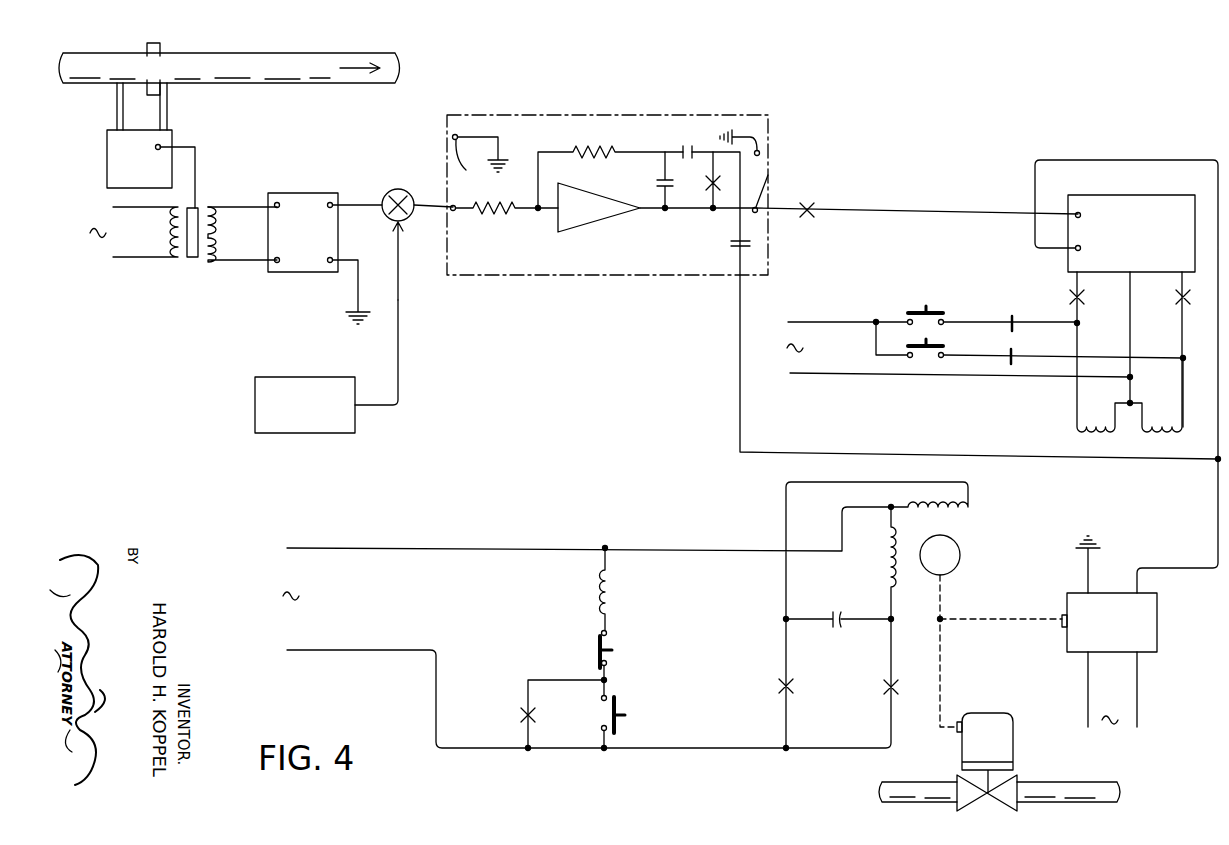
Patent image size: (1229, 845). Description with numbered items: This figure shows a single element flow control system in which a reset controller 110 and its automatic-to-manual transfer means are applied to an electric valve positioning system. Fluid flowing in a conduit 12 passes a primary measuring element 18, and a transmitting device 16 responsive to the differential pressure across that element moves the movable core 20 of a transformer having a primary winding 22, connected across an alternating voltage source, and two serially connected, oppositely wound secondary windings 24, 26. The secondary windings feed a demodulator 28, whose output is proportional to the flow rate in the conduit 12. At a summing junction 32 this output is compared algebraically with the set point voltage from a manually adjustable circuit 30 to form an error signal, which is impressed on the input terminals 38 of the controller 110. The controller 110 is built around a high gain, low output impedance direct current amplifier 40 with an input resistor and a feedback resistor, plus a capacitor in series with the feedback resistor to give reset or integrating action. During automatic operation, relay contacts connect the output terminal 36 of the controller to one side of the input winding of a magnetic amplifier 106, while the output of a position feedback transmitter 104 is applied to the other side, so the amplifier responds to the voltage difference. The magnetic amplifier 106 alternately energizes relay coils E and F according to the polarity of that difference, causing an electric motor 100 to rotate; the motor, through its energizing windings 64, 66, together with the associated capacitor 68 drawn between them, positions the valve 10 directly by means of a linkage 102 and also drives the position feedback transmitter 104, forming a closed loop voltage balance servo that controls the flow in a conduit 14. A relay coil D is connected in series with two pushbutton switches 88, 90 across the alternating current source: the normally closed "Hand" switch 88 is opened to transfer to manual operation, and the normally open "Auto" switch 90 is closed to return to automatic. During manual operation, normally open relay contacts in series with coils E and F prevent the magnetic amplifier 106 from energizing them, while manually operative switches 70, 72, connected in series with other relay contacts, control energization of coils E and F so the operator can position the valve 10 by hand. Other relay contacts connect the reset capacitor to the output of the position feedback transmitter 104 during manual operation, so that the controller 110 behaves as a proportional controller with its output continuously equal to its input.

The valve 10 is at (1013, 742).
The conduit 12 is at (345, 85).
The conduit 14 is at (1103, 782).
The transmitting device 16 is at (107, 173).
The primary measuring element 18 is at (168, 86).
The movable core 20 is at (194, 207).
The primary winding 22 is at (160, 230).
The secondary winding 24 is at (221, 224).
The secondary winding 26 is at (212, 262).
The demodulator 28 is at (314, 243).
The manually adjustable circuit 30 is at (285, 434).
The summing junction 32 is at (392, 190).
The output terminal 36 is at (768, 185).
The input terminals 38 is at (453, 205).
The D.-C. amplifier 40 is at (612, 223).
The energizing winding 64 is at (891, 572).
The energizing winding 66 is at (966, 520).
The capacitor 68 is at (834, 610).
The manually operative switch 70 is at (917, 308).
The manually operative switch 72 is at (945, 346).
The pushbutton switch 88 is at (597, 643).
The pushbutton switch 90 is at (618, 706).
The electric motor 100 is at (960, 565).
The linkage 102 is at (942, 676).
The position feedback transmitter 104 is at (1157, 655).
The magnetic amplifier 106 is at (1150, 195).
The controller 110 is at (666, 115).